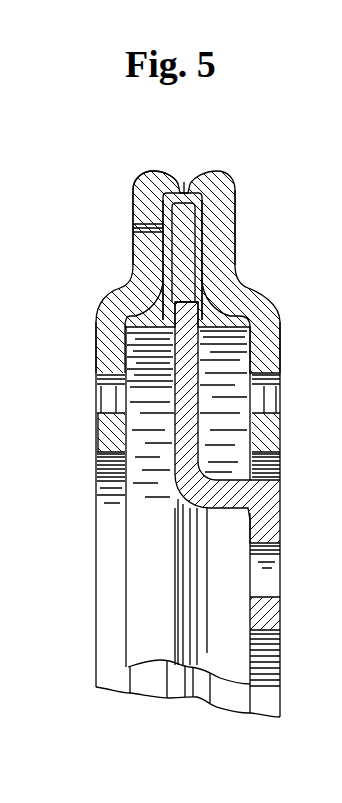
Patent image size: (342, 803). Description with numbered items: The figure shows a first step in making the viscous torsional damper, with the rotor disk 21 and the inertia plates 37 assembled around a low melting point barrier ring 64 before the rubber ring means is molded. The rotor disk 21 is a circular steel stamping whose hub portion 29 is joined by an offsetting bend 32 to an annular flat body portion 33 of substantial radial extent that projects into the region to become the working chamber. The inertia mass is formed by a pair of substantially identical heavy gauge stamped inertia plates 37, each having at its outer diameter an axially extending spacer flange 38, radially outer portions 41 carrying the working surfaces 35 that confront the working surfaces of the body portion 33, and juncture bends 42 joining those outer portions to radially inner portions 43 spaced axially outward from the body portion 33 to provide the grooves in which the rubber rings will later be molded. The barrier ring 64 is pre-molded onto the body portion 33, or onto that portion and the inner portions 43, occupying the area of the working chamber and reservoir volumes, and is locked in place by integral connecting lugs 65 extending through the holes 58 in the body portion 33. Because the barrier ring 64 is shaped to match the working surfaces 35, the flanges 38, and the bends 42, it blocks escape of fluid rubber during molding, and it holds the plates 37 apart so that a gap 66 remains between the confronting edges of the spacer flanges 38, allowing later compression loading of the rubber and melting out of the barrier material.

The rotor disk 21 is at (279, 509).
The hub portion 29 is at (270, 617).
The offsetting bend 32 is at (213, 500).
The annular flat body portion 33 is at (124, 328).
The working surfaces 35 is at (224, 235).
The inertia plates 37 is at (103, 438).
The spacer flange 38 is at (203, 180).
The radially outer portions 41 is at (150, 256).
The juncture bends 42 is at (122, 302).
The radially inner portions 43 is at (112, 350).
The holes 58 is at (223, 401).
The low melting point barrier ring 64 is at (242, 290).
The integral connecting lugs 65 is at (222, 262).
The gap 66 is at (152, 182).